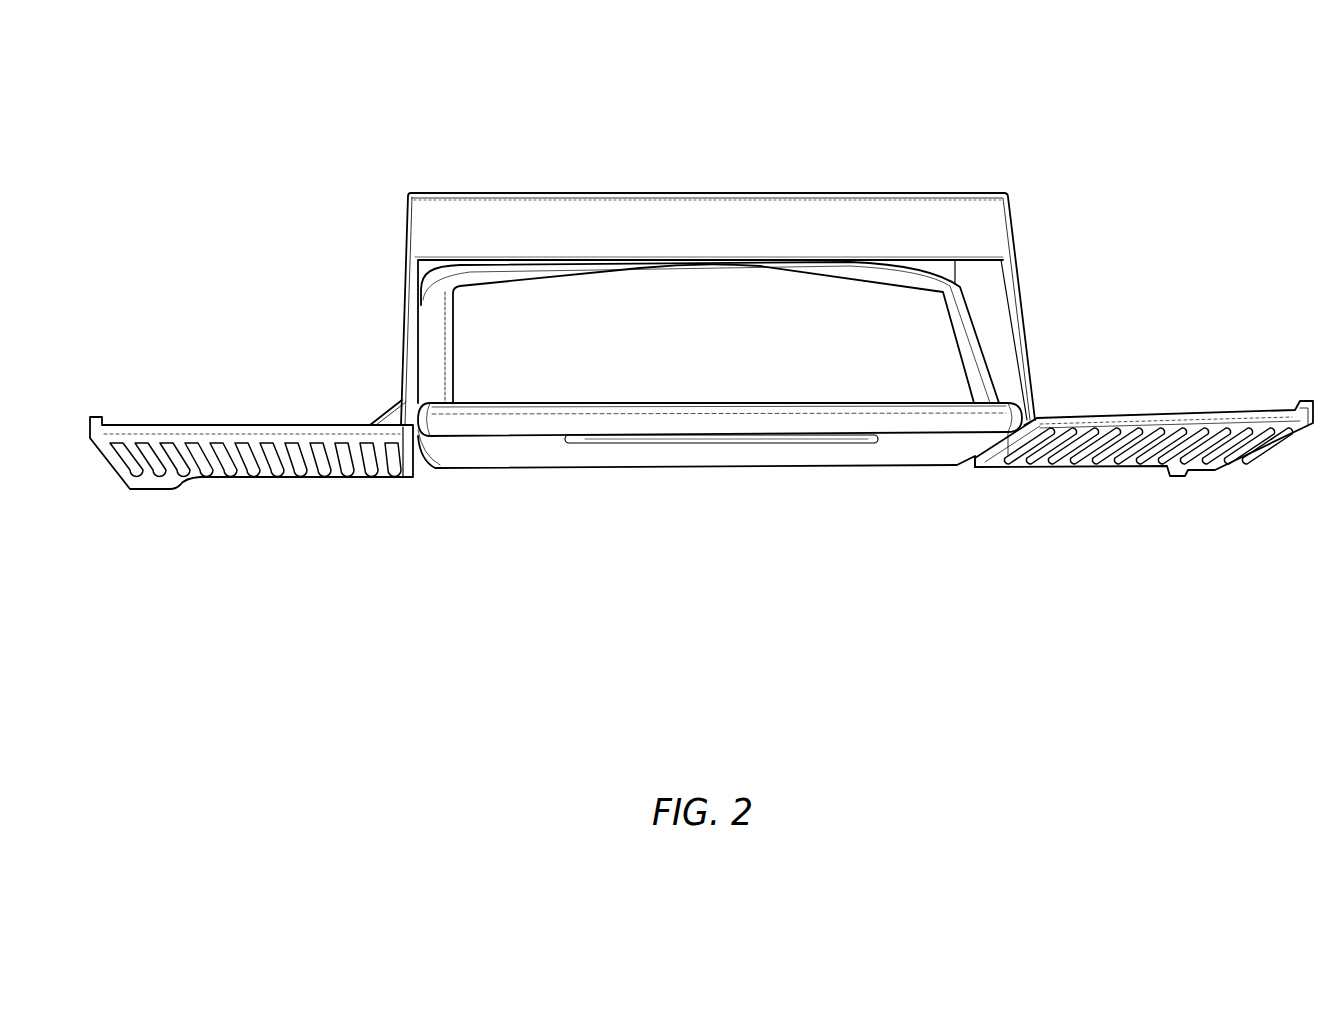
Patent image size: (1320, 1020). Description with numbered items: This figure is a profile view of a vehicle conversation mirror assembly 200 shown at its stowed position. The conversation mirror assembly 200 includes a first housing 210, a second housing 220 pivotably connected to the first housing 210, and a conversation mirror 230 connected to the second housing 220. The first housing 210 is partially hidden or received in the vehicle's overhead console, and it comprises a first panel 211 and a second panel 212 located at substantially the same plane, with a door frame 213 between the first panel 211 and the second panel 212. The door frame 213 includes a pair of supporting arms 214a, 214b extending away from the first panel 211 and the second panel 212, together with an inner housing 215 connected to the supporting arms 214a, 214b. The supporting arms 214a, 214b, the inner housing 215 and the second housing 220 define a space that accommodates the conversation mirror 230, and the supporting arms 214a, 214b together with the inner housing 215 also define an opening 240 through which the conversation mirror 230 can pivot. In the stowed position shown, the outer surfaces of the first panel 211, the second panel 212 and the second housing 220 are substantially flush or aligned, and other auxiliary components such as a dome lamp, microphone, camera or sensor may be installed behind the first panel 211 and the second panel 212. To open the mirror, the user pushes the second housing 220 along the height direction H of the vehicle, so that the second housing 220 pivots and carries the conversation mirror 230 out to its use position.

The conversation mirror assembly 200 is at (1195, 72).
The first housing 210 is at (1020, 306).
The first panel 211 is at (1198, 470).
The second panel 212 is at (284, 478).
The door frame 213 is at (644, 220).
The supporting arm 214a is at (400, 356).
The supporting arm 214b is at (1033, 354).
The inner housing 215 is at (722, 241).
The second housing 220 is at (946, 459).
The conversation mirror 230 is at (724, 343).
The opening 240 is at (548, 261).
The height direction H is at (894, 415).